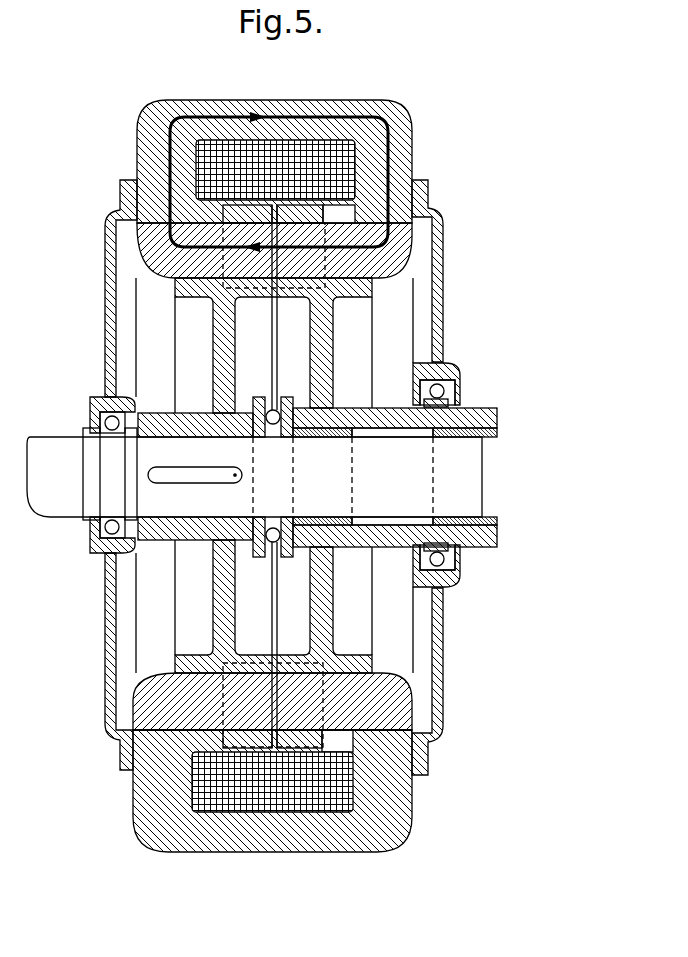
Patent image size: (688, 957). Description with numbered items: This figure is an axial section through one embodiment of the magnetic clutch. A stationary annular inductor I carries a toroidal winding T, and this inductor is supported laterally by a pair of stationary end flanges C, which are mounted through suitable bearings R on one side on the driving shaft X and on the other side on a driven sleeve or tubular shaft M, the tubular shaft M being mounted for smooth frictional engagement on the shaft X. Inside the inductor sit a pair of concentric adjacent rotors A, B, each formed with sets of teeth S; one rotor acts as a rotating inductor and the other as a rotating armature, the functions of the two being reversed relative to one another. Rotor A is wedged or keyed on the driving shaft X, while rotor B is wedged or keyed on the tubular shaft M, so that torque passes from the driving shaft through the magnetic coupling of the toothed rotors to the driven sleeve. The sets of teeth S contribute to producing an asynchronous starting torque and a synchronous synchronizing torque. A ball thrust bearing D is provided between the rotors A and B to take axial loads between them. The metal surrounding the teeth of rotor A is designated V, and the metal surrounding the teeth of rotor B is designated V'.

The sets of teeth S is at (134, 138).
The stationary annular inductor I is at (295, 117).
The toroidal winding T is at (340, 148).
The metal surrounding the teeth V is at (316, 512).
The metal surrounding the teeth V' is at (273, 683).
The rotor A is at (178, 264).
The rotor B is at (367, 260).
The stationary end flanges C is at (105, 327).
The bearings R is at (110, 418).
The ball thrust bearing D is at (270, 404).
The driven sleeve or tubular shaft M is at (388, 418).
The driving shaft X is at (254, 477).